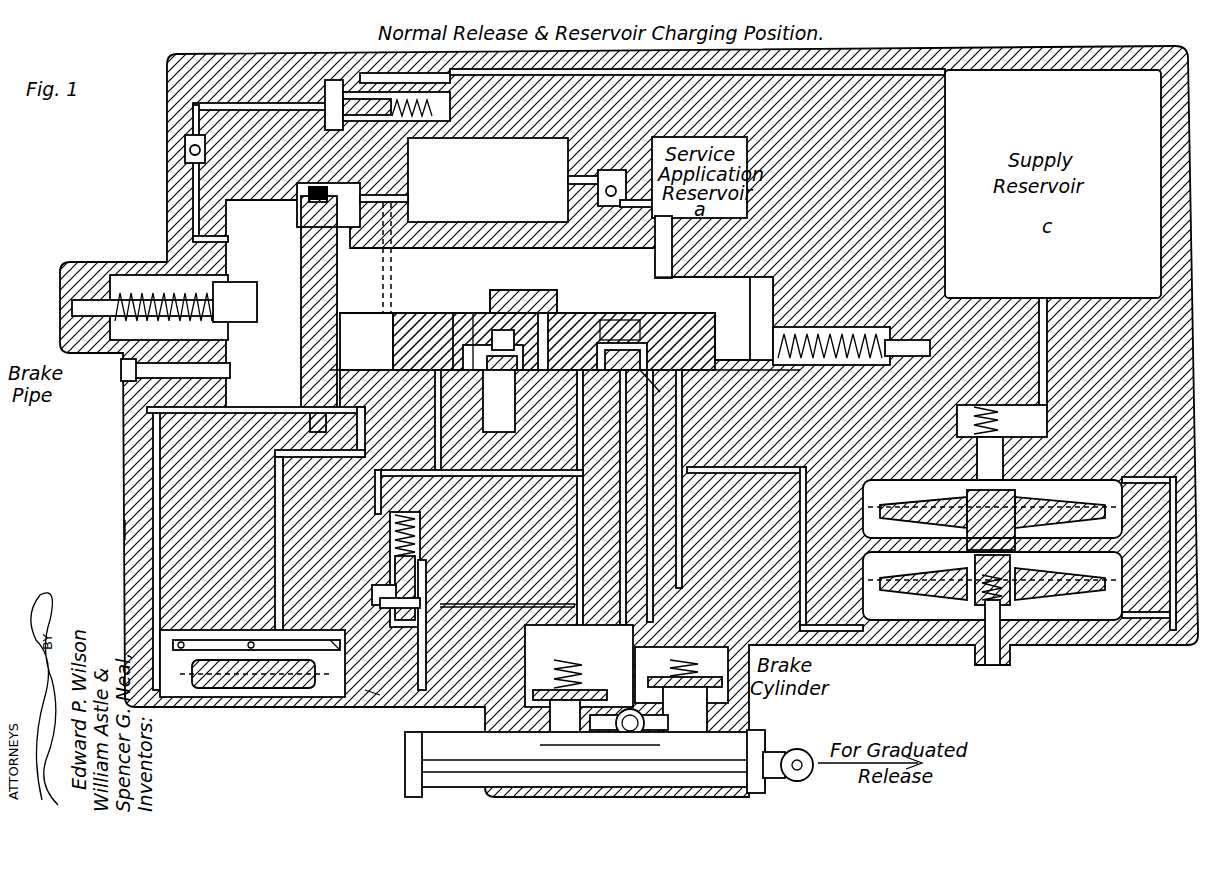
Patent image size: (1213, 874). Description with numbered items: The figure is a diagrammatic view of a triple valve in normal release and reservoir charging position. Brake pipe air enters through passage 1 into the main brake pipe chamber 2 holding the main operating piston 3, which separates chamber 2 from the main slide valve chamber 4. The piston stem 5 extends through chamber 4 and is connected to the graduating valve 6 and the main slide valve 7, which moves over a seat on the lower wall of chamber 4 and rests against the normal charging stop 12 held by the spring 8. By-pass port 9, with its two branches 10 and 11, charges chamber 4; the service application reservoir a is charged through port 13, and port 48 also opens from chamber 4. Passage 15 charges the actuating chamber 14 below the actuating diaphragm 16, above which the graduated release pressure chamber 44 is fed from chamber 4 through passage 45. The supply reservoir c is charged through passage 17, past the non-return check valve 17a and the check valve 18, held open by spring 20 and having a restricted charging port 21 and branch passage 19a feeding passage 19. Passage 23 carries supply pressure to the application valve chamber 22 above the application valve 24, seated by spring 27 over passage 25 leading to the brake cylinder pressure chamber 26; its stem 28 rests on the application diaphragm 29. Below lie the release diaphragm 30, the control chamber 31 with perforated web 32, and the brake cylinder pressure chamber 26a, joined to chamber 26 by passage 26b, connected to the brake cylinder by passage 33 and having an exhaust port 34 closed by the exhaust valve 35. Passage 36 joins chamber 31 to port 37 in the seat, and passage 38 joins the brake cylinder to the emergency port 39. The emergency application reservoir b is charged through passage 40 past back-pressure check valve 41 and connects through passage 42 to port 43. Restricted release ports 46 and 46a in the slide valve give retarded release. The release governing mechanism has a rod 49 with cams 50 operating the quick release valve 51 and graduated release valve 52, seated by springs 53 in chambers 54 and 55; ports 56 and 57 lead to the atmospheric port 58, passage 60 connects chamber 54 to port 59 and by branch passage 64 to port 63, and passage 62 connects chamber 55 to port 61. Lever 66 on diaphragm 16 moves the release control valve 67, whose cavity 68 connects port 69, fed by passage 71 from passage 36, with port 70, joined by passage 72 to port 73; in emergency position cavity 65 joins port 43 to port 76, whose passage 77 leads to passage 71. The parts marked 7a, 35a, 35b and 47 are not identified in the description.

The passage 1 is at (122, 372).
The main brake pipe chamber 2 is at (499, 305).
The main operating piston 3 is at (303, 337).
The main slide valve chamber 4 is at (554, 311).
The piston stem 5 is at (587, 313).
The graduating valve 6 is at (528, 290).
The main slide valve 7 is at (620, 330).
The valve port 7a is at (650, 313).
The spring 8 is at (780, 332).
The by-pass port 9 is at (305, 200).
The branch 10 is at (345, 190).
The branch 11 is at (485, 180).
The normal charging stop 12 is at (740, 330).
The port 13 is at (663, 277).
The actuating chamber 14 is at (205, 707).
The passage 15 is at (153, 531).
The actuating diaphragm 16 is at (298, 690).
The passage 17 is at (193, 212).
The non-return check valve 17a is at (188, 152).
The spring-pressed check valve 18 is at (337, 92).
The passage 19 is at (633, 76).
The branch passage 19a is at (450, 92).
The spring 20 is at (420, 118).
The restricted charging port 21 is at (360, 99).
The application valve chamber 22 is at (1015, 405).
The passage 23 is at (1046, 310).
The application valve 24 is at (1003, 442).
The passage 25 is at (923, 504).
The brake cylinder pressure chamber 26 is at (1100, 480).
The brake cylinder pressure chamber 26a is at (1125, 620).
The open passage 26b is at (1173, 632).
The spring 27 is at (985, 405).
The depending stem 28 is at (1010, 510).
The application diaphragm 29 is at (1072, 518).
The release diaphragm 30 is at (992, 586).
The control chamber 31 is at (900, 582).
The perforated web 32 is at (993, 605).
The passage 33 is at (880, 645).
The brake cylinder exhaust port 34 is at (993, 666).
The brake cylinder exhaust valve 35 is at (1005, 640).
The diaphragm plate 35a is at (1060, 592).
The diaphragm follower 35b is at (975, 582).
The passage 36 is at (991, 492).
The port 37 is at (515, 390).
The passage 38 is at (735, 625).
The emergency port 39 is at (680, 370).
The passage 40 is at (567, 177).
The back-pressure check valve 41 is at (600, 198).
The passage 42 is at (395, 212).
The port 43 is at (395, 368).
The graduated release pressure chamber 44 is at (200, 641).
The passage 45 is at (153, 568).
The restricted release port 46 is at (497, 356).
The restricted release port 46a is at (660, 392).
The piston 47 is at (243, 296).
The port 48 is at (522, 330).
The manually operable rod 49 is at (470, 775).
The valve operating cams 50 is at (540, 760).
The quick release valve 51 is at (707, 710).
The graduated release valve 52 is at (540, 695).
The springs 53 is at (668, 660).
The quick release valve chamber 54 is at (645, 735).
The graduated release valve chamber 55 is at (505, 700).
The quick release port 56 is at (700, 726).
The graduated release port 57 is at (560, 737).
The atmospheric port 58 is at (628, 738).
The port 59 is at (580, 370).
The passage 60 is at (577, 523).
The port 61 is at (626, 370).
The passage 62 is at (653, 447).
The port 63 is at (485, 345).
The branch passage 64 is at (499, 432).
The cavity 65 is at (462, 345).
The lever 66 is at (340, 650).
The release control valve 67 is at (420, 690).
The cavity 68 is at (400, 600).
The port 69 is at (372, 590).
The port 70 is at (375, 695).
The passage 71 is at (390, 520).
The passage 72 is at (505, 603).
The port 73 is at (622, 356).
The port 76 is at (428, 318).
The passage 77 is at (310, 418).